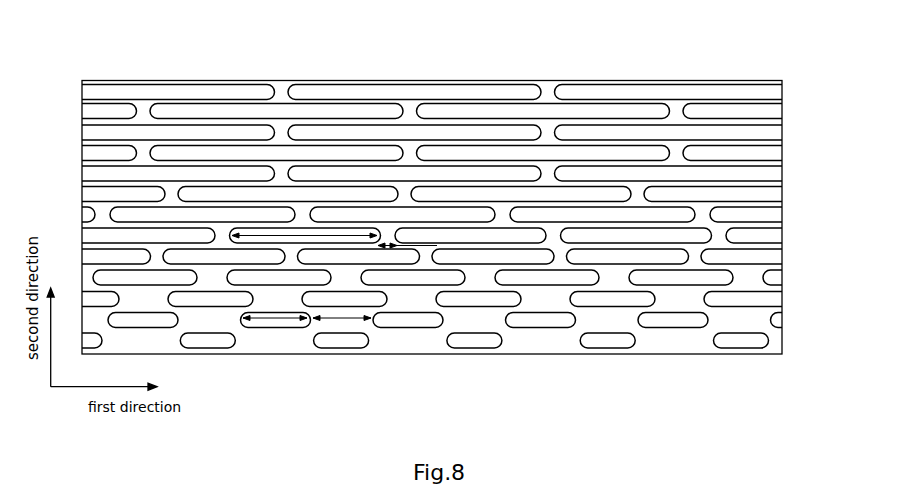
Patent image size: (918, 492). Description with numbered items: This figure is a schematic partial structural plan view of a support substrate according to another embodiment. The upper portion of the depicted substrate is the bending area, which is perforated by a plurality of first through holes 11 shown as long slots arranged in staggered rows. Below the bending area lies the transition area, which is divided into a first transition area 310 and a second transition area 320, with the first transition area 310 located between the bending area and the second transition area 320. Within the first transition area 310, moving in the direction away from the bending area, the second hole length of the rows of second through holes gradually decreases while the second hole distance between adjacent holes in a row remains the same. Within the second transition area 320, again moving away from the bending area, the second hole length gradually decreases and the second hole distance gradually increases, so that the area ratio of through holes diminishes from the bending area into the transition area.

The first through holes 11 is at (212, 92).
The first transition area 310 is at (793, 183).
The second transition area 320 is at (793, 270).